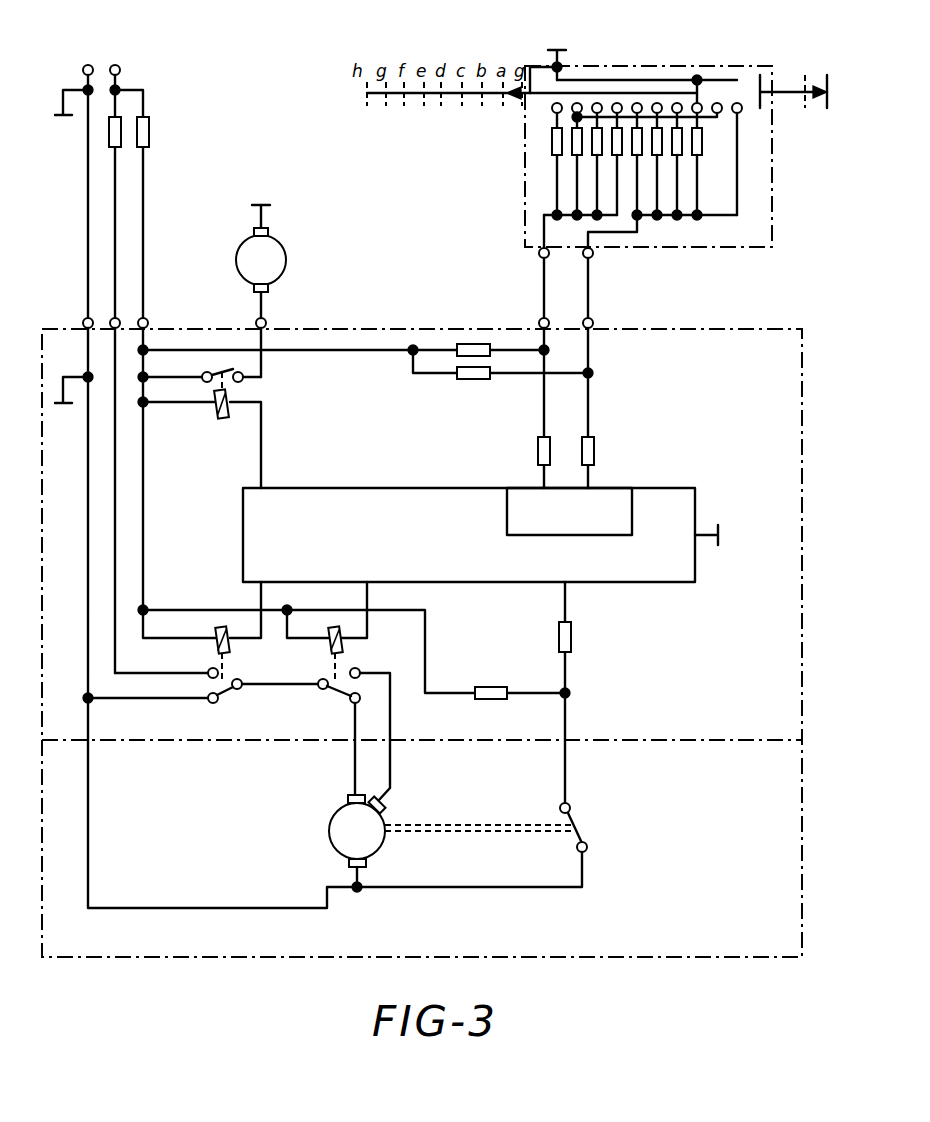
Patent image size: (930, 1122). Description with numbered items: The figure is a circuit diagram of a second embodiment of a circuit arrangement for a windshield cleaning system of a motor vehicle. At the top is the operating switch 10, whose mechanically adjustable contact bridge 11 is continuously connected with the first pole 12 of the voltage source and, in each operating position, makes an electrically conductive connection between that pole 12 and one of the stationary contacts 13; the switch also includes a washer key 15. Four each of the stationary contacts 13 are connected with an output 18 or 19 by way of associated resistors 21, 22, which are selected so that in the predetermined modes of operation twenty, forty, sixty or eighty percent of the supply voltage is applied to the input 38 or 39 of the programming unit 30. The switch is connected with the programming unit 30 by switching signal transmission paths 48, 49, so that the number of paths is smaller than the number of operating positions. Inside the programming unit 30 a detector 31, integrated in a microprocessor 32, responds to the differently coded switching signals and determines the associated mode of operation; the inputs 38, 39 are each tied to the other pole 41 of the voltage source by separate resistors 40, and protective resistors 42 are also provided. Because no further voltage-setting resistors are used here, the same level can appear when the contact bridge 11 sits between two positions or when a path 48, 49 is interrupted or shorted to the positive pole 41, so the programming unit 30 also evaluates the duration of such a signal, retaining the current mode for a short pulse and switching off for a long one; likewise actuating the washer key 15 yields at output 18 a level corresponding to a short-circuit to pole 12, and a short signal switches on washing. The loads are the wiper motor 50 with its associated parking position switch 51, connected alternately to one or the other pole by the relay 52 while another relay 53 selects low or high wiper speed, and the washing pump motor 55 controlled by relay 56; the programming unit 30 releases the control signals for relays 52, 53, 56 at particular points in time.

The operating switch 10 is at (773, 148).
The contact bridge 11 is at (700, 90).
The first pole of a voltage source 12 is at (82, 67).
The stationary contacts 13 is at (545, 104).
The washer key 15 is at (800, 72).
The output of the operating switch 18 is at (592, 258).
The output of the operating switch 19 is at (540, 253).
The resistors 21 is at (700, 158).
The resistors 22 is at (549, 164).
The programming unit 30 is at (793, 398).
The detector 31 is at (569, 511).
The microprocessor 32 is at (480, 535).
The input of the programming unit 38 is at (592, 328).
The input of the programming unit 39 is at (538, 322).
The resistors 40 is at (457, 361).
The other pole of the voltage source 41 is at (120, 67).
The protective resistors 42 is at (538, 452).
The switching signal transmission path 48 is at (591, 297).
The switching signal transmission path 49 is at (544, 293).
The wiper motor 50 is at (366, 848).
The parking position switch 51 is at (580, 822).
The relay 52 is at (230, 652).
The relay 53 is at (333, 657).
The washing pump motor 55 is at (285, 257).
The relay 56 is at (214, 420).